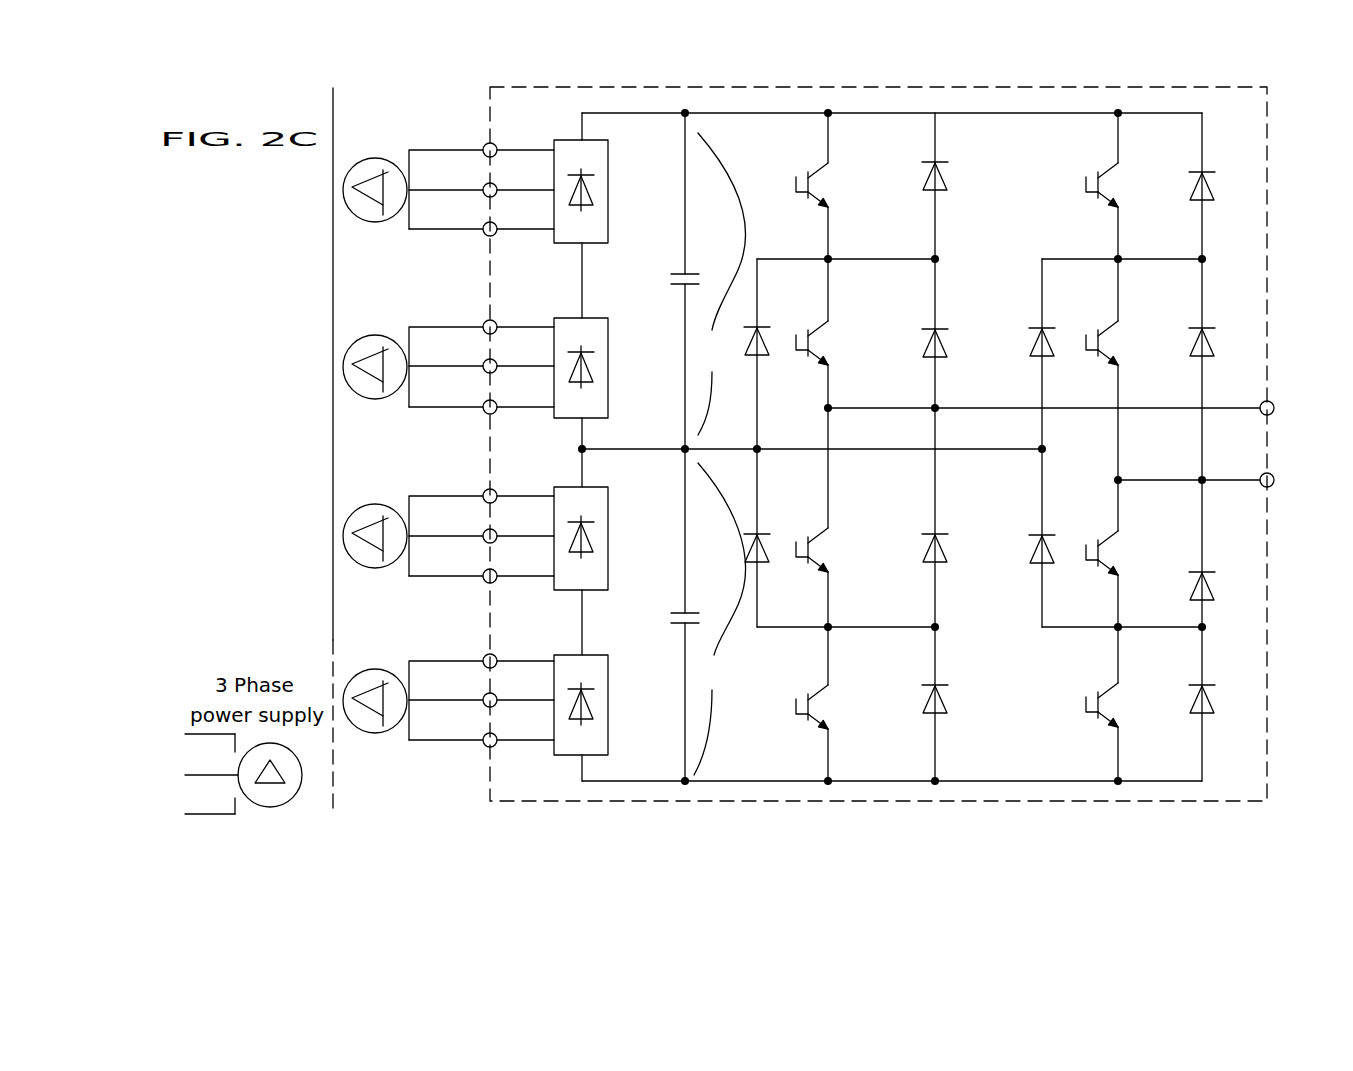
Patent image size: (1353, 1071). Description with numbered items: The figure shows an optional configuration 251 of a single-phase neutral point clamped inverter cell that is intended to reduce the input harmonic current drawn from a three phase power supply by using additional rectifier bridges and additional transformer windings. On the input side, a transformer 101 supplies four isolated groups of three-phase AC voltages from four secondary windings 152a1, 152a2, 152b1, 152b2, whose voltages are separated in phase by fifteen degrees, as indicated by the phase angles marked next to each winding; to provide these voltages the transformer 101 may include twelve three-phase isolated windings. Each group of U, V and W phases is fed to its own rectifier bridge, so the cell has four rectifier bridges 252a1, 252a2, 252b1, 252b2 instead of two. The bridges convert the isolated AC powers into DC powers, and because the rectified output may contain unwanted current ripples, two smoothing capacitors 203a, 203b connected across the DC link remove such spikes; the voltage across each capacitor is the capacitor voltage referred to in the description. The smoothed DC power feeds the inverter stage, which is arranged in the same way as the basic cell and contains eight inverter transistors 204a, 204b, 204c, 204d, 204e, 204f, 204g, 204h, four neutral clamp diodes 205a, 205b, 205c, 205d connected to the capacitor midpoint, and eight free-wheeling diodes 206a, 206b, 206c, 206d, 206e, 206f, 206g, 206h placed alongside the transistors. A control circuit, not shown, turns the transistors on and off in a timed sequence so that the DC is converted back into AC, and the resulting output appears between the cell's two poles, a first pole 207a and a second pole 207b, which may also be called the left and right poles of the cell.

The transformer 101 is at (342, 124).
The optional configuration 251 is at (480, 84).
The secondary winding 152a1 is at (372, 222).
The secondary winding 152a2 is at (372, 399).
The secondary winding 152b1 is at (372, 568).
The secondary winding 152b2 is at (372, 733).
The rectifier bridge 252a1 is at (608, 166).
The rectifier bridge 252a2 is at (608, 340).
The rectifier bridge 252b1 is at (608, 516).
The rectifier bridge 252b2 is at (608, 680).
The smoothing capacitor 203a is at (698, 274).
The smoothing capacitor 203b is at (693, 606).
The inverter transistor 204a is at (812, 200).
The inverter transistor 204b is at (812, 358).
The inverter transistor 204c is at (812, 565).
The inverter transistor 204d is at (812, 722).
The inverter transistor 204e is at (1102, 200).
The inverter transistor 204f is at (1102, 358).
The inverter transistor 204g is at (1102, 568).
The inverter transistor 204h is at (1102, 720).
The neutral clamp diode 205a is at (765, 326).
The neutral clamp diode 205b is at (765, 533).
The neutral clamp diode 205c is at (1050, 327).
The neutral clamp diode 205d is at (1050, 534).
The free-wheeling diode 206a is at (943, 161).
The free-wheeling diode 206b is at (943, 328).
The free-wheeling diode 206c is at (943, 533).
The free-wheeling diode 206d is at (943, 684).
The free-wheeling diode 206e is at (1210, 171).
The free-wheeling diode 206f is at (1210, 327).
The free-wheeling diode 206g is at (1210, 571).
The free-wheeling diode 206h is at (1210, 684).
The first pole 207a is at (1271, 400).
The second pole 207b is at (1270, 487).